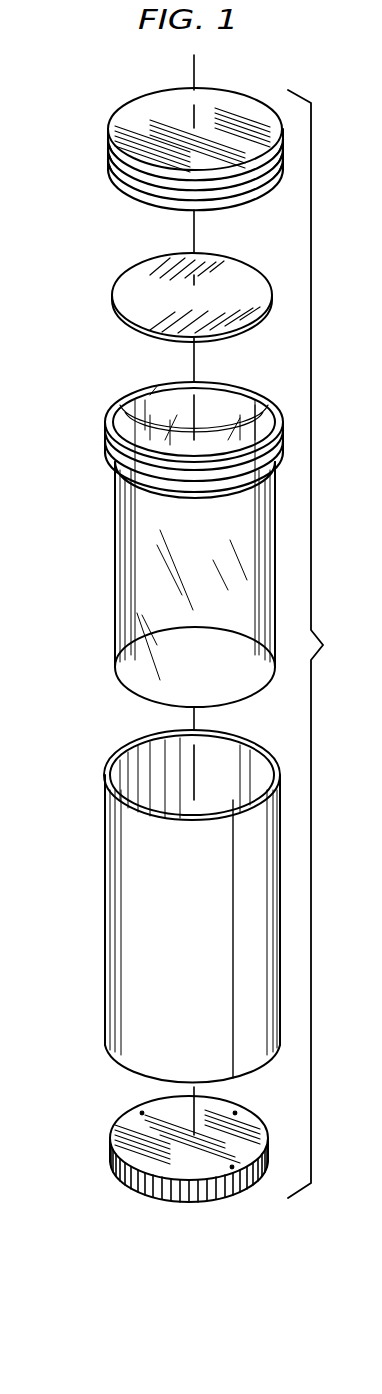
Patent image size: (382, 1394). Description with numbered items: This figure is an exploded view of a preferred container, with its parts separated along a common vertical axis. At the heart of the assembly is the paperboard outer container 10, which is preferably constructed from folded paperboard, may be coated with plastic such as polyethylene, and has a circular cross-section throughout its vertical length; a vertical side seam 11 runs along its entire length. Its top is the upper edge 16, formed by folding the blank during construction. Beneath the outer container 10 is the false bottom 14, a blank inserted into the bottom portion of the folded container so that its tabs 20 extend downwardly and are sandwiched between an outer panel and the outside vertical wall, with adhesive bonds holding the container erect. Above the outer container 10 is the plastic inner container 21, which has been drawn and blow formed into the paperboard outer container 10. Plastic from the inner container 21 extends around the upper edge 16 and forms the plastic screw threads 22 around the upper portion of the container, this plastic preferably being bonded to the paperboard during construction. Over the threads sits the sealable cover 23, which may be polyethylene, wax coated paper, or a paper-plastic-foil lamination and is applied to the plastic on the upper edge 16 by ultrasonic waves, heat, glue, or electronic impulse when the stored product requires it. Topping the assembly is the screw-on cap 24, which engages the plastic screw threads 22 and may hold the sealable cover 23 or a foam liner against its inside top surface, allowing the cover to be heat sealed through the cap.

The paperboard outer container 10 is at (156, 901).
The vertical side seam 11 is at (232, 1030).
The false bottom 14 is at (110, 1135).
The upper edge 16 is at (125, 752).
The tabs 20 is at (118, 1176).
The plastic inner container 21 is at (113, 606).
The plastic screw threads 22 is at (105, 447).
The sealable cover 23 is at (112, 290).
The screw-on cap 24 is at (107, 166).